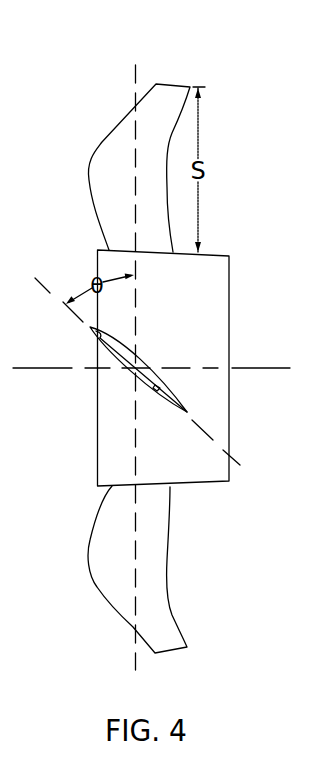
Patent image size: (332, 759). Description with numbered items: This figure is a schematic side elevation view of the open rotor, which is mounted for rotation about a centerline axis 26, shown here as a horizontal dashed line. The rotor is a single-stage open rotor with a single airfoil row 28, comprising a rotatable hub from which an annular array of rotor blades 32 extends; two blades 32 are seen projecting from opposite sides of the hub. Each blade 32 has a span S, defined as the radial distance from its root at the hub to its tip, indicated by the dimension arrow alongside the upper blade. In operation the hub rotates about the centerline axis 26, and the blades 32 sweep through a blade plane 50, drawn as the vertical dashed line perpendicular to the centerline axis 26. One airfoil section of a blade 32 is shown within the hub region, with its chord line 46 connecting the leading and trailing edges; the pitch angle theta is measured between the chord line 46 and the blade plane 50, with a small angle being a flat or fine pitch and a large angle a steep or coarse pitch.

The centerline axis 26 is at (252, 367).
The airfoil row 28 is at (189, 54).
The rotor blade 32 is at (92, 136).
The chord line 46 is at (97, 343).
The blade plane 50 is at (135, 85).